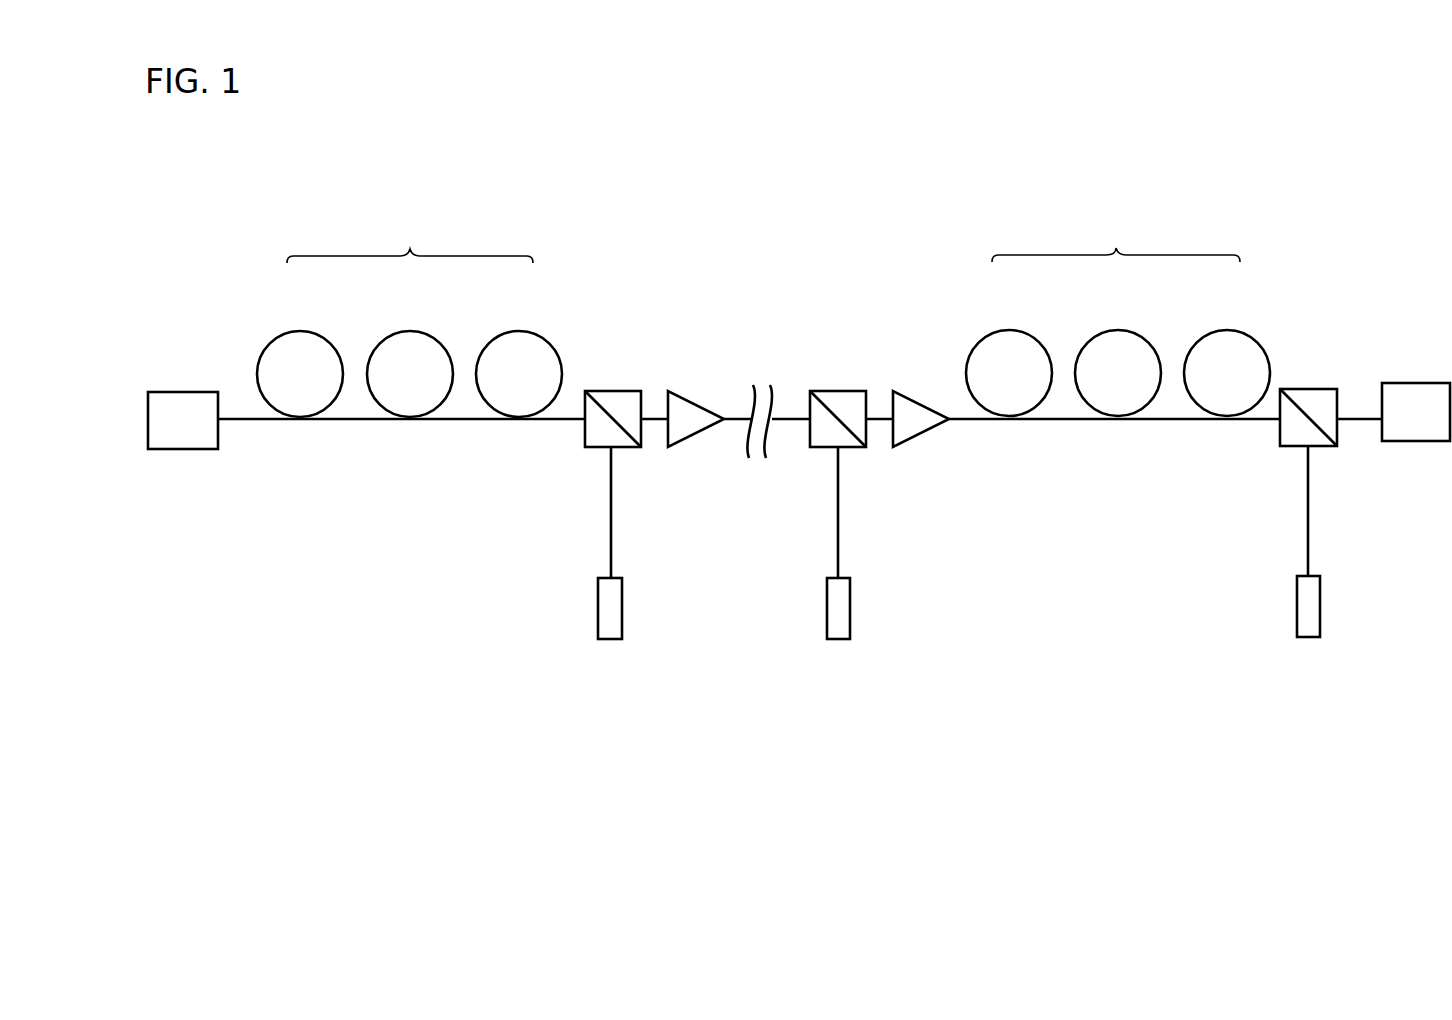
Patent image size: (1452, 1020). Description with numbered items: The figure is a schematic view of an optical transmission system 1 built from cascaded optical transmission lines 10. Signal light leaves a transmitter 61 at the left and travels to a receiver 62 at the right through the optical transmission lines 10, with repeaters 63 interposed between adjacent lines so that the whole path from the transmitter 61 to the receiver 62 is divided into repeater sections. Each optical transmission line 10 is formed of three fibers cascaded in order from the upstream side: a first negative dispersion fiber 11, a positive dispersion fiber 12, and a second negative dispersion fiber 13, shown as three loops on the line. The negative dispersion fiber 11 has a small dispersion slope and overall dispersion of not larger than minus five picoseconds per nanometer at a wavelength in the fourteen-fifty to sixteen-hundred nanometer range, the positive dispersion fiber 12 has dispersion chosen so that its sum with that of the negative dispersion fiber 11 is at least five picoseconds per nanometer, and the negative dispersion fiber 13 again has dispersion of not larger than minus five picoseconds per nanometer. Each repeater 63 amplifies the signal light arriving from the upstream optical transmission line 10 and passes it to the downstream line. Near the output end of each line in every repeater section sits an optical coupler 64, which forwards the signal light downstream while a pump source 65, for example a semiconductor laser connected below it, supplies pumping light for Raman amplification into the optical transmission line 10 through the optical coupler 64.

The optical transmission system 1 is at (818, 214).
The optical transmission line 10 is at (763, 240).
The negative dispersion fiber 11 is at (300, 331).
The positive dispersion fiber 12 is at (414, 331).
The negative dispersion fiber 13 is at (519, 331).
The transmitter 61 is at (175, 398).
The receiver 62 is at (1416, 392).
The repeater 63 is at (691, 391).
The optical coupler 64 is at (614, 391).
The pump source 65 is at (622, 610).